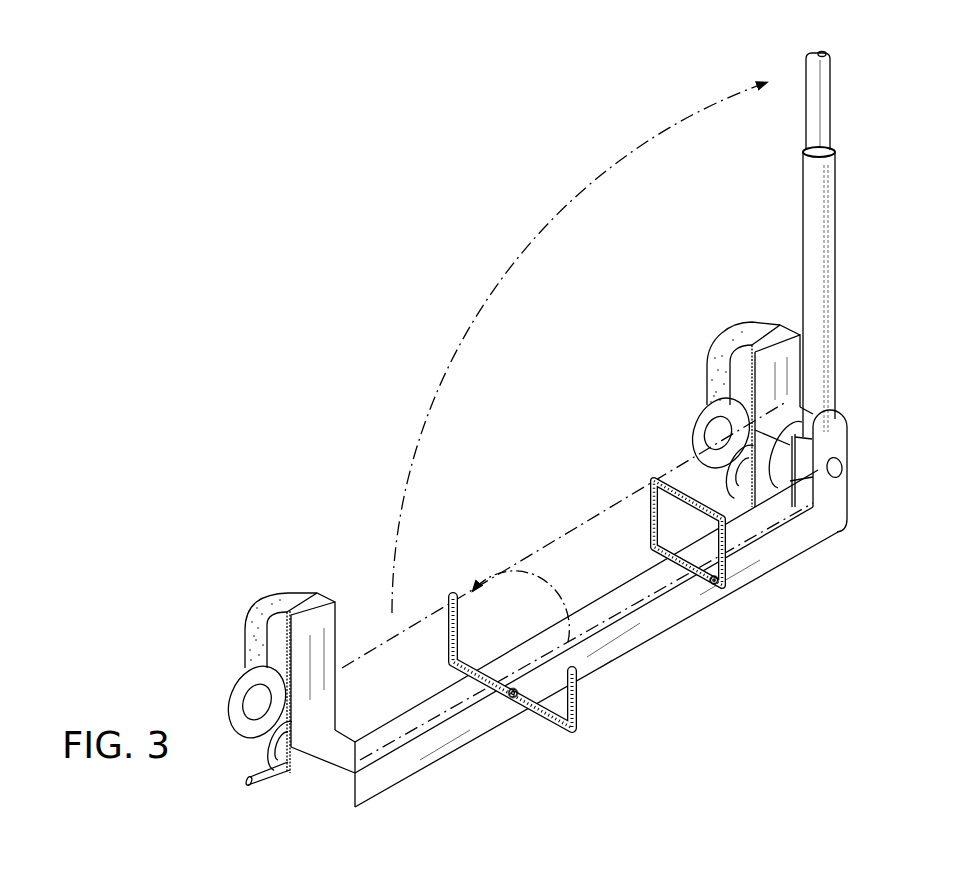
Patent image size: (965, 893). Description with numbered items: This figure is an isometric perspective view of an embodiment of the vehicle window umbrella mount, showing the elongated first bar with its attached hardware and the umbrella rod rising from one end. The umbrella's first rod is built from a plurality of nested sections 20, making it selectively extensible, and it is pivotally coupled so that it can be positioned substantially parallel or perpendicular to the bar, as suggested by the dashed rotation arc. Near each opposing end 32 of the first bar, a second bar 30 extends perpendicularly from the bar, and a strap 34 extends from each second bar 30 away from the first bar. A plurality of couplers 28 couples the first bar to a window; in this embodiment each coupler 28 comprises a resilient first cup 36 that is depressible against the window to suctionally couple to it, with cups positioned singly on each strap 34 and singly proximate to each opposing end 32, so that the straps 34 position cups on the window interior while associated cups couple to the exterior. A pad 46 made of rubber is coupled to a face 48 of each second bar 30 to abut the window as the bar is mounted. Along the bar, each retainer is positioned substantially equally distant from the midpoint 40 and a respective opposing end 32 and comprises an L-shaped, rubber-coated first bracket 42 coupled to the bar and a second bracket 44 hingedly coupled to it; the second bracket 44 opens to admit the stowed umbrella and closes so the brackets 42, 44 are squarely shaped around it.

The nested sections 20 is at (824, 106).
The couplers 28 is at (268, 745).
The second bar 30 is at (332, 640).
The opposing end 32 is at (856, 503).
The strap 34 is at (736, 326).
The first cup 36 is at (695, 424).
The midpoint 40 is at (623, 608).
The first bracket 42 is at (642, 543).
The second bracket 44 is at (733, 524).
The pad 46 is at (286, 640).
The face 48 is at (279, 648).